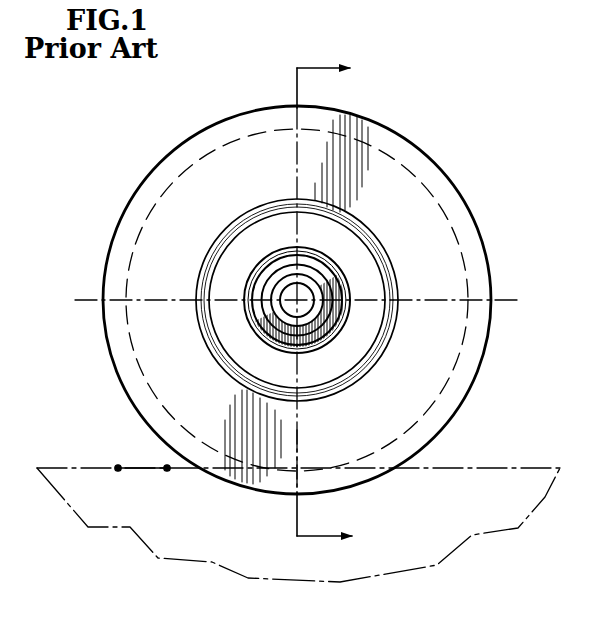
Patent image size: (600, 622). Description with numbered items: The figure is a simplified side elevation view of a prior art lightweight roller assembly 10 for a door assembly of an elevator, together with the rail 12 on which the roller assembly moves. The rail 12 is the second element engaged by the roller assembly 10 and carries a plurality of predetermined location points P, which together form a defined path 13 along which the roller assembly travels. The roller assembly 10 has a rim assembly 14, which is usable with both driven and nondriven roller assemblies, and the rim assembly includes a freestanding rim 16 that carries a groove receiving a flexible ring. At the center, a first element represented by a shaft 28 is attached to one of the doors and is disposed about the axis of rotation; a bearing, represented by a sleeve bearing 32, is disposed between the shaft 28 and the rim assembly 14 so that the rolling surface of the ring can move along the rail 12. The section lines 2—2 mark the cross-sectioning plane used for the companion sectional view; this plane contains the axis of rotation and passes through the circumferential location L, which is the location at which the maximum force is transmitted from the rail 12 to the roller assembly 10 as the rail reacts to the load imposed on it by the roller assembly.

The lightweight roller assembly 10 is at (158, 152).
The rail 12 is at (80, 468).
The defined path 13 is at (142, 470).
The rim assembly 14 is at (456, 183).
The freestanding rim 16 is at (461, 242).
The shaft 28 is at (282, 283).
The sleeve bearing 32 is at (263, 325).
The predetermined location points P is at (118, 466).
The circumferential location L is at (293, 477).
The section lines 2— 2 is at (337, 306).